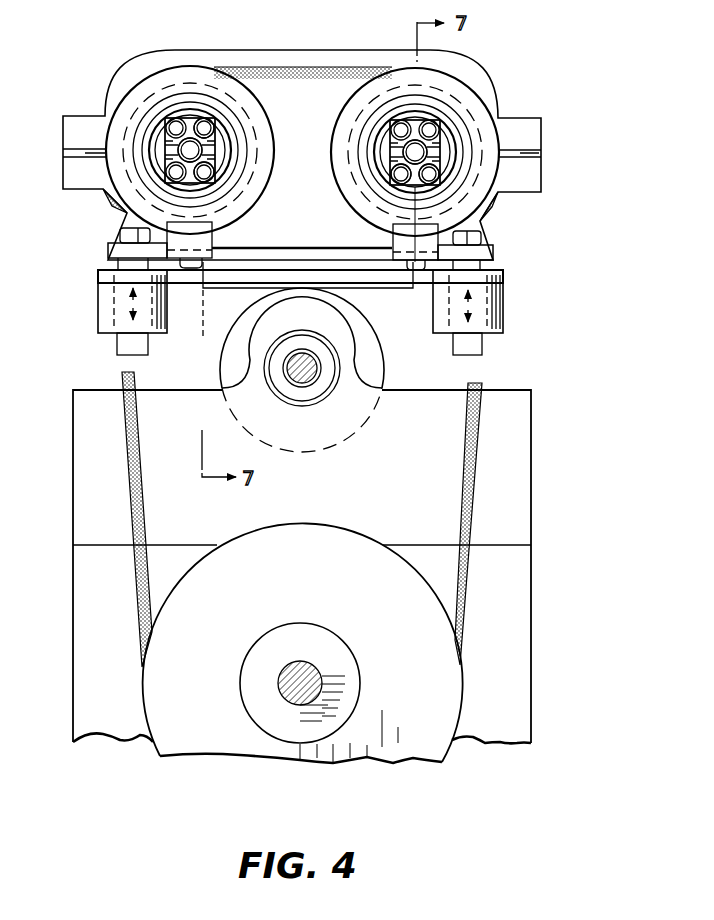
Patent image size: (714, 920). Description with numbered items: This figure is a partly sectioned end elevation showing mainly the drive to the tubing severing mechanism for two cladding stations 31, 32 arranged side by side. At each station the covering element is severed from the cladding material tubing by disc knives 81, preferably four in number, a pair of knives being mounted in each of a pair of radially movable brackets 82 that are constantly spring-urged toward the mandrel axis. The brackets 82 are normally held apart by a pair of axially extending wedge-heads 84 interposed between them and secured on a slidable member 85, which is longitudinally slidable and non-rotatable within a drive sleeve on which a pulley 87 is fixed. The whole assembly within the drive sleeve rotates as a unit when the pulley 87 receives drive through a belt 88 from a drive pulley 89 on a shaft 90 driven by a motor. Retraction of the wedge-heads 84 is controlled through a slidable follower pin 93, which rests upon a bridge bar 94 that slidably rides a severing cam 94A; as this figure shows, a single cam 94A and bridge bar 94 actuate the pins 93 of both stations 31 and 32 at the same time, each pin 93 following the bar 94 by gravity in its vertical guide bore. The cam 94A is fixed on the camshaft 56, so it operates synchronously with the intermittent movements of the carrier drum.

The station 31 is at (112, 74).
The station 32 is at (497, 81).
The disc knives 81 is at (210, 127).
The radially movable brackets 82 is at (189, 126).
The wedge-heads 84 is at (392, 150).
The slidable member 85 is at (222, 82).
The pulley 87 is at (160, 68).
The belt 88 is at (475, 461).
The drive pulley 89 is at (278, 590).
The shaft 90 is at (320, 677).
The follower pin 93 is at (223, 265).
The bridge bar 94 is at (365, 283).
The severing cam 94A is at (385, 367).
The camshaft 56 is at (312, 372).